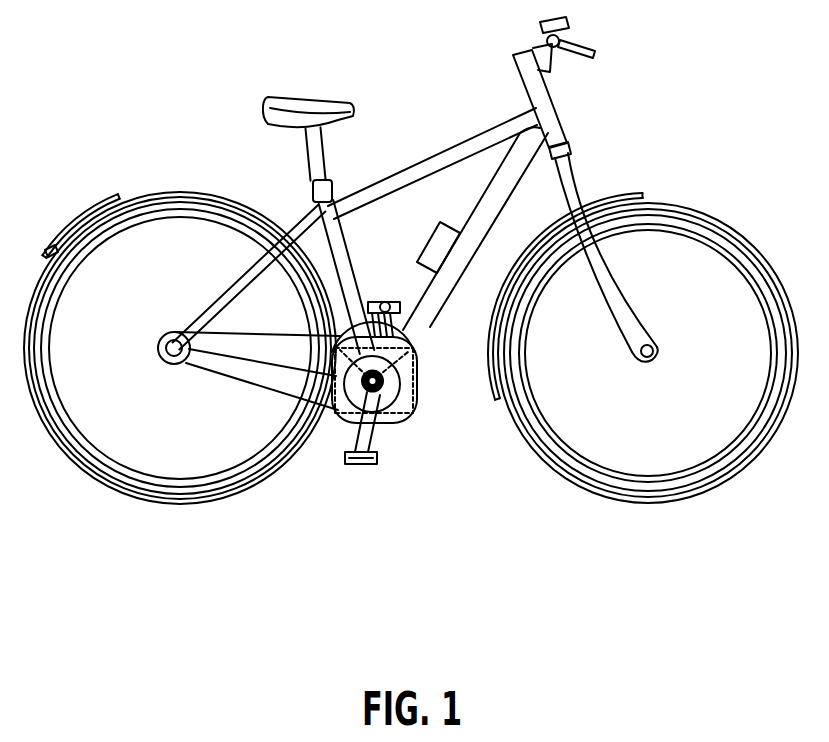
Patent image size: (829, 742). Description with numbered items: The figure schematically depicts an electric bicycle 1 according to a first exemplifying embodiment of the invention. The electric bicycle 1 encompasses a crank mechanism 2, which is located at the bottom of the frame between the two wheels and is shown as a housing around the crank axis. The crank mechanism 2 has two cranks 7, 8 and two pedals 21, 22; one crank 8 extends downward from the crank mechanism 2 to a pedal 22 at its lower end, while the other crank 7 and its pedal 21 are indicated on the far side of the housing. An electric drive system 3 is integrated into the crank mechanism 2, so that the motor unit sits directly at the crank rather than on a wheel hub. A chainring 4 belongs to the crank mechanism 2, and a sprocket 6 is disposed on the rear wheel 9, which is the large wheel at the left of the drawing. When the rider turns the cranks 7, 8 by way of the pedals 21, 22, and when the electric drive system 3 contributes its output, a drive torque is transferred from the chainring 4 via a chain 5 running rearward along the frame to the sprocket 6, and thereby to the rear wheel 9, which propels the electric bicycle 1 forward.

The electric bicycle 1 is at (137, 80).
The crank mechanism 2 is at (418, 407).
The electric drive system 3 is at (410, 417).
The chainring 4 is at (388, 425).
The chain 5 is at (199, 377).
The sprocket 6 is at (160, 353).
The crank 7 is at (394, 322).
The crank 8 is at (350, 435).
The rear wheel 9 is at (176, 205).
The pedal 21 is at (371, 300).
The pedal 22 is at (372, 465).